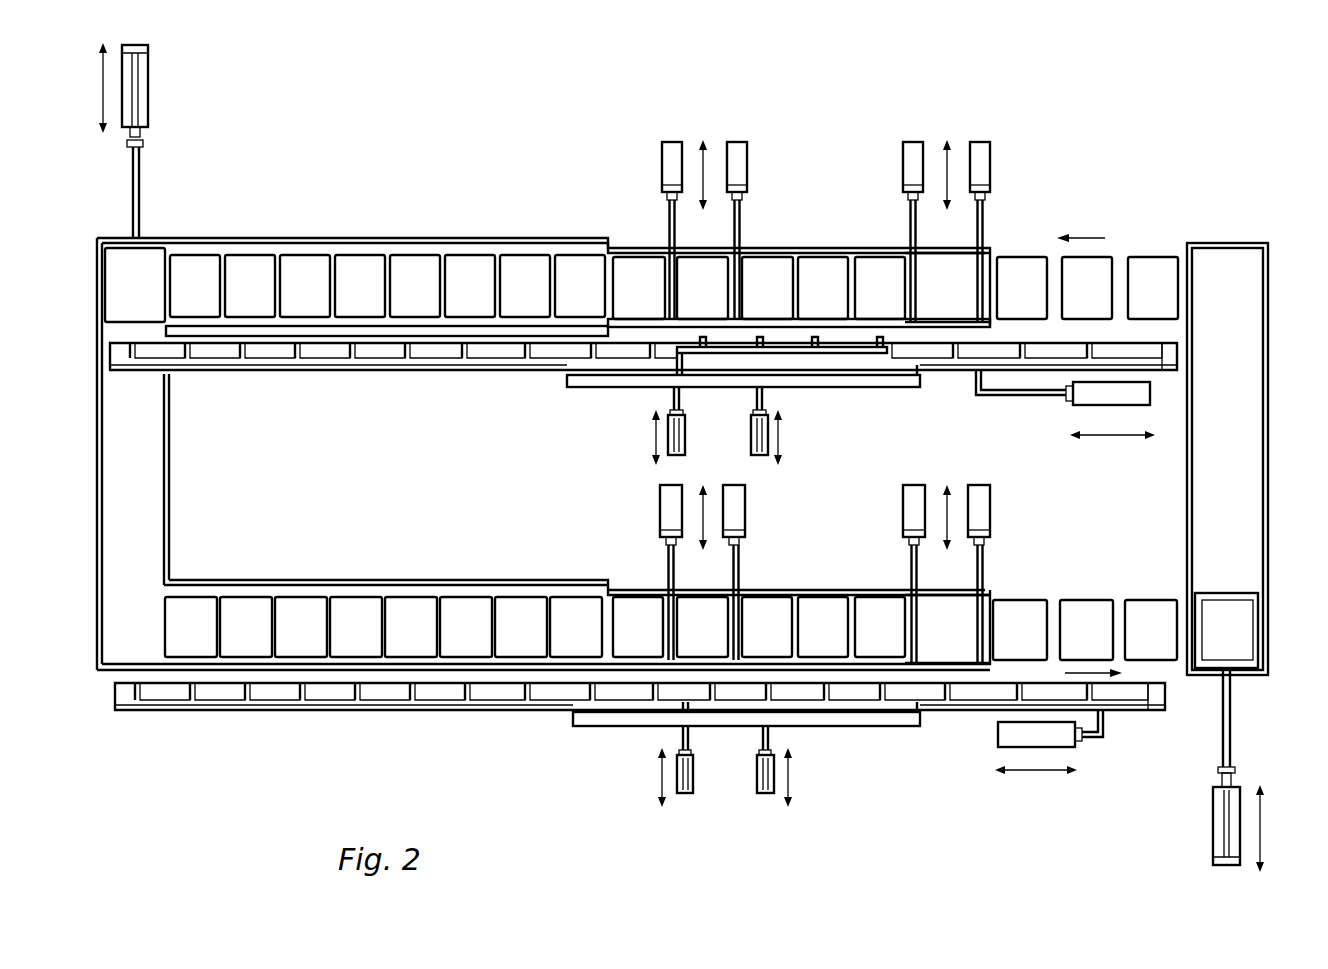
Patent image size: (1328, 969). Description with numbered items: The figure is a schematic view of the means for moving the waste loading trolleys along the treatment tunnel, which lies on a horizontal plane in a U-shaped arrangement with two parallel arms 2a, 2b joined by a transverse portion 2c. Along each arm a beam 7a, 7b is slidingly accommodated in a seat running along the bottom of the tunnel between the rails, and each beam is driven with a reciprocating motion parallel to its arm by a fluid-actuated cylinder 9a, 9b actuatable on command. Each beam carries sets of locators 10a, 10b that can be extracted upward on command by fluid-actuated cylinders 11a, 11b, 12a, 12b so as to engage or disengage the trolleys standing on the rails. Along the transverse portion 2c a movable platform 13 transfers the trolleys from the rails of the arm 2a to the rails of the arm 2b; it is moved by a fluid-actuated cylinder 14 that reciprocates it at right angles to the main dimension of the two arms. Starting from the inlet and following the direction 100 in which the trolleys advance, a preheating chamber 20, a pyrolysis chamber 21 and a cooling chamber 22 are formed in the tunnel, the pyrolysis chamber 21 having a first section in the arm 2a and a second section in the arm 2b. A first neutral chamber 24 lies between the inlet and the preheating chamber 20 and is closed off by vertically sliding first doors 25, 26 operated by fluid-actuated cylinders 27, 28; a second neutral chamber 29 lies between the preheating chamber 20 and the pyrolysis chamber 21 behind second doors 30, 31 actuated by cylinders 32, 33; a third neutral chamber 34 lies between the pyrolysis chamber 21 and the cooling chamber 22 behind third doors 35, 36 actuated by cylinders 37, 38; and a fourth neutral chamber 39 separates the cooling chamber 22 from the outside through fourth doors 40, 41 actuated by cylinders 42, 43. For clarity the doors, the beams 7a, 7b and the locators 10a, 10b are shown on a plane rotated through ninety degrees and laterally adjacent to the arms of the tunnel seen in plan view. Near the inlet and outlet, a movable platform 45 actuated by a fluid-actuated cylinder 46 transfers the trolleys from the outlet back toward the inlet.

The arm of the tunnel 2a is at (278, 243).
The arm of the tunnel 2b is at (115, 680).
The transverse portion 2c is at (113, 432).
The beam 7a is at (268, 372).
The beam 7b is at (262, 715).
The fluid-actuated cylinder 9a is at (1140, 398).
The fluid-actuated cylinder 9b is at (1025, 740).
The locators 10a is at (862, 362).
The locators 10b is at (440, 372).
The fluid-actuated cylinder 11a is at (772, 430).
The fluid-actuated cylinder 11b is at (772, 795).
The fluid-actuated cylinder 12a is at (688, 432).
The fluid-actuated cylinder 12b is at (684, 795).
The movable platform 13 is at (122, 284).
The fluid-actuated cylinder 14 is at (146, 96).
The preheating chamber 20 is at (785, 285).
The pyrolysis chamber 21 is at (470, 256).
The cooling chamber 22 is at (838, 652).
The first neutral chamber 24 is at (982, 285).
The first door 25 is at (1000, 275).
The first door 26 is at (905, 288).
The fluid-actuated cylinder 27 is at (992, 167).
The fluid-actuated cylinder 28 is at (913, 140).
The second neutral chamber 29 is at (705, 262).
The second door 30 is at (760, 255).
The second door 31 is at (660, 292).
The fluid-actuated cylinder 32 is at (748, 140).
The fluid-actuated cylinder 33 is at (660, 165).
The third neutral chamber 34 is at (690, 598).
The third door 35 is at (755, 600).
The third door 36 is at (665, 605).
The fluid-actuated cylinder 37 is at (748, 497).
The fluid-actuated cylinder 38 is at (660, 492).
The fourth neutral chamber 39 is at (985, 600).
The fourth door 40 is at (1035, 630).
The fourth door 41 is at (878, 598).
The fluid-actuated cylinder 42 is at (993, 497).
The fluid-actuated cylinder 43 is at (905, 497).
The movable platform 45 is at (1240, 630).
The fluid-actuated cylinder 46 is at (1215, 810).
The direction 100 is at (1160, 242).